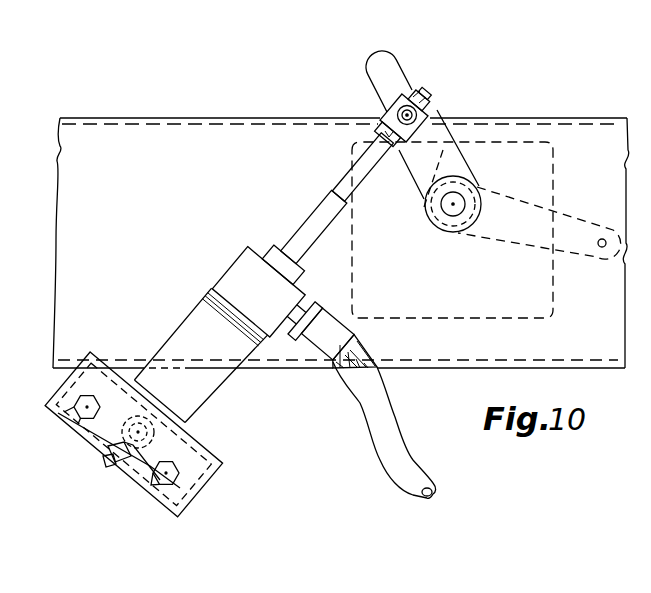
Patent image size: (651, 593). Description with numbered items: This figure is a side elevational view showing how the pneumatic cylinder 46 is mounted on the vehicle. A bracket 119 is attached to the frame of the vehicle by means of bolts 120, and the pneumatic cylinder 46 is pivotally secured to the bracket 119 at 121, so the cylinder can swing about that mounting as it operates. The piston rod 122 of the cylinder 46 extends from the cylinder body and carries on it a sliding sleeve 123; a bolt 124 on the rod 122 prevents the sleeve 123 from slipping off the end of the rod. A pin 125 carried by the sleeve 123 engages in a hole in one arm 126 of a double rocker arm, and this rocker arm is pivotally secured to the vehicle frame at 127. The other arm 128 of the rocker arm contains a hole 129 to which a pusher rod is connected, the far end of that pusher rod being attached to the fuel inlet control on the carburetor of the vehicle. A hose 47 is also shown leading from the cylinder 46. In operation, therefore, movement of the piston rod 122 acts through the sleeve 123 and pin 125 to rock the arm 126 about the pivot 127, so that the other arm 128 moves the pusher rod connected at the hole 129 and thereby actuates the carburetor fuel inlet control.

The pneumatic cylinder 46 is at (212, 375).
The hose 47 is at (378, 440).
The bracket 119 is at (222, 463).
The bolts 120 is at (78, 415).
The pivot of cylinder to bracket 121 is at (136, 467).
The piston rod 122 is at (312, 206).
The sliding sleeve 123 is at (440, 118).
The bolt 124 is at (421, 83).
The pin 125 is at (405, 152).
The arm of double rocker arm 126 is at (380, 63).
The rocker arm pivot 127 is at (452, 218).
The other arm of rocker arm 128 is at (582, 220).
The hole 129 is at (598, 262).